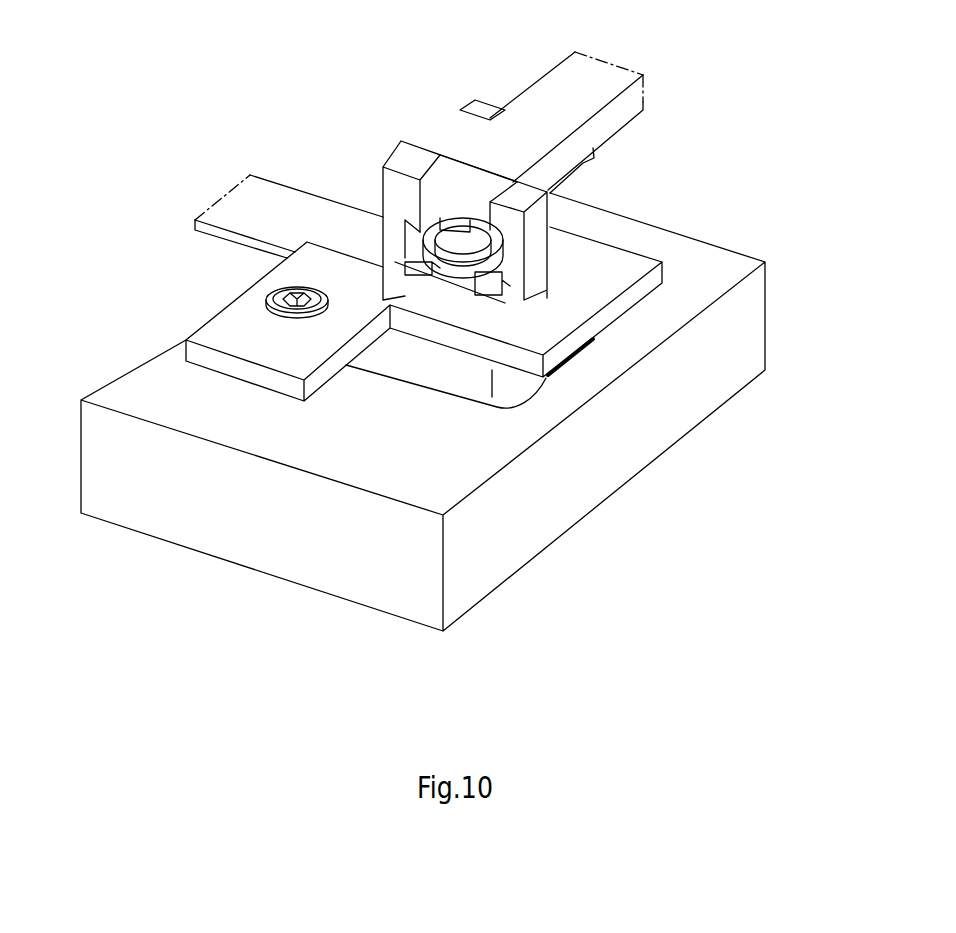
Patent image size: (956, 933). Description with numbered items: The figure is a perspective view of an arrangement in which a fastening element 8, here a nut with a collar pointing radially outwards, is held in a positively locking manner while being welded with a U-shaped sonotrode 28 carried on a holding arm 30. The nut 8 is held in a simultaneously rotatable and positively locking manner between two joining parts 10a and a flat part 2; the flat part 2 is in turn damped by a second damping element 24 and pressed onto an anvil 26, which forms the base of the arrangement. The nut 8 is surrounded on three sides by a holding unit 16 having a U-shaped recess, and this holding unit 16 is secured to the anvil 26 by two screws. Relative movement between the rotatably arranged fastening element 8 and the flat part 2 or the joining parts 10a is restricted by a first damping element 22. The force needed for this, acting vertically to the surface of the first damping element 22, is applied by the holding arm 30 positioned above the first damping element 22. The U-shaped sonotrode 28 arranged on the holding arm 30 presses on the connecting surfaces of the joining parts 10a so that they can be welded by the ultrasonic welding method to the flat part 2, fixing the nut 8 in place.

The flat part 2 is at (270, 197).
The fastening element 8 is at (452, 272).
The joining parts 10a is at (407, 263).
The holding unit 16 is at (613, 260).
The first damping element 22 is at (413, 258).
The second damping element 24 is at (442, 378).
The anvil 26 is at (262, 545).
The U-shaped sonotrode 28 is at (512, 197).
The holding arm 30 is at (553, 92).